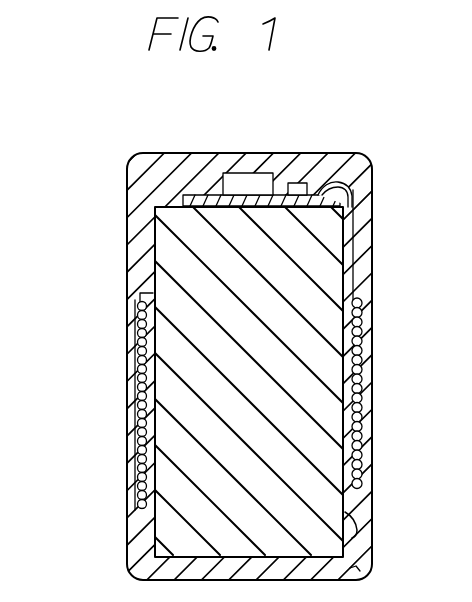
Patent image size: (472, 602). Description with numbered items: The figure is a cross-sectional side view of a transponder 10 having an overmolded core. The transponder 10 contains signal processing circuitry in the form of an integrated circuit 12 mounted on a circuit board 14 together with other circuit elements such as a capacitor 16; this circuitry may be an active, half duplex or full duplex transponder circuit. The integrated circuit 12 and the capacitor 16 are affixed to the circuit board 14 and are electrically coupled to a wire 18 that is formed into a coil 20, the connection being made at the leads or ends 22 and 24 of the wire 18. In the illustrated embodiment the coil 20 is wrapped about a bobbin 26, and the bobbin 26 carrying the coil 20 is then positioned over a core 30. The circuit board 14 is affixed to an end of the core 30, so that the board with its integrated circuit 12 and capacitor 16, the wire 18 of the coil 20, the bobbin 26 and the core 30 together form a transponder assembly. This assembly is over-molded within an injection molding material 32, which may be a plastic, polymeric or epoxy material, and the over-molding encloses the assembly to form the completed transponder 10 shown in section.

The transponder 10 is at (102, 167).
The integrated circuit 12 is at (262, 173).
The circuit board 14 is at (195, 195).
The capacitor 16 is at (320, 153).
The wire 18 is at (142, 390).
The coil 20 is at (134, 314).
The wire end 22 is at (364, 258).
The wire end 24 is at (355, 194).
The bobbin 26 is at (355, 531).
The core 30 is at (158, 548).
The injection molding material 32 is at (361, 571).